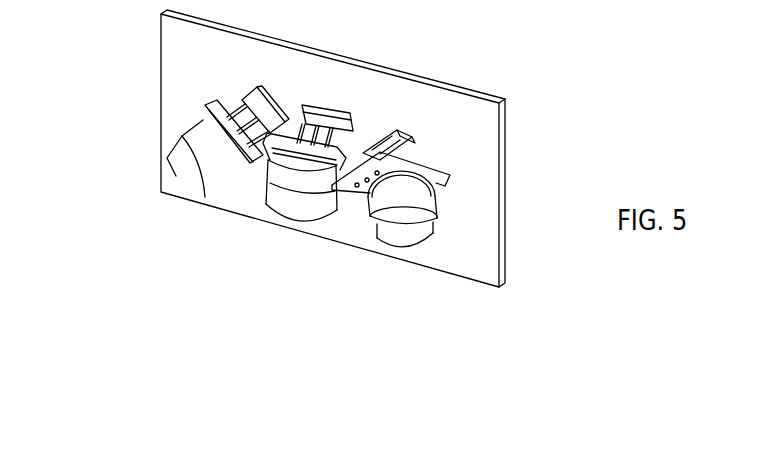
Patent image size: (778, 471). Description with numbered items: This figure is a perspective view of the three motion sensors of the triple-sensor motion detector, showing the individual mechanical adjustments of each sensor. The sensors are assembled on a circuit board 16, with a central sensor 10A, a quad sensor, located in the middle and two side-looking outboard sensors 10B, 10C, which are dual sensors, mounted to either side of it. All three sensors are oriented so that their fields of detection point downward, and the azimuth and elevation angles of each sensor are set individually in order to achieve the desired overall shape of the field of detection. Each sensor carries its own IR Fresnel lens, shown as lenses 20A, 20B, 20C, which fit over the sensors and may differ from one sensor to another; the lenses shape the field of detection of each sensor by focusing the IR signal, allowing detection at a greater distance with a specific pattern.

The circuit board 16 is at (435, 103).
The central sensor 10A is at (292, 168).
The outboard sensor 10B is at (196, 129).
The outboard sensor 10C is at (417, 195).
The IR Fresnel lens 20A is at (297, 217).
The IR Fresnel lens 20B is at (183, 180).
The IR Fresnel lens 20C is at (407, 237).